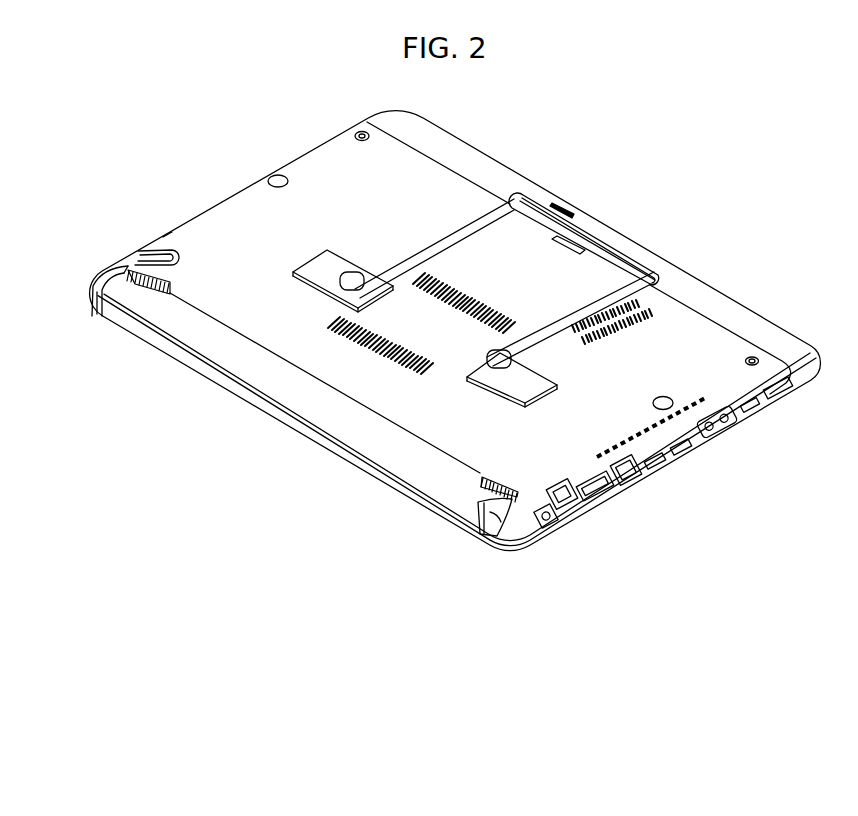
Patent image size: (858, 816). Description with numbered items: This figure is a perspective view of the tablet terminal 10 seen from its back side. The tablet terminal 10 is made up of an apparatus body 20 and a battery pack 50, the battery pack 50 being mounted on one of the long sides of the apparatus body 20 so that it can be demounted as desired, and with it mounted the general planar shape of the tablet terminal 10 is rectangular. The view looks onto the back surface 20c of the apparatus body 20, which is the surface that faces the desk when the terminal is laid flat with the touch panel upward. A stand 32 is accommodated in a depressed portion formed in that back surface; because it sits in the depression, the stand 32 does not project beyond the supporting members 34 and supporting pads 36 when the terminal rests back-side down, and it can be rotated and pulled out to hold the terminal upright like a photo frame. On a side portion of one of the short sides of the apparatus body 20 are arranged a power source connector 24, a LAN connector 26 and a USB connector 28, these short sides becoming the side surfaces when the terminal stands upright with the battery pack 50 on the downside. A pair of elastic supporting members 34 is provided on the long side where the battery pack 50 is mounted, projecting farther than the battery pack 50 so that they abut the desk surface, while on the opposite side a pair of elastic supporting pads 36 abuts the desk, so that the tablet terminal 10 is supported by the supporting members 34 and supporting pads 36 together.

The tablet terminal 10 is at (265, 58).
The apparatus body 20 is at (527, 165).
The back surface 20c is at (218, 217).
The power source connector 24 is at (552, 522).
The LAN connector 26 is at (632, 473).
The USB connector 28 is at (687, 447).
The stand 32 is at (600, 244).
The supporting members 34 is at (92, 300).
The supporting pads 36 is at (361, 132).
The battery pack 50 is at (297, 450).